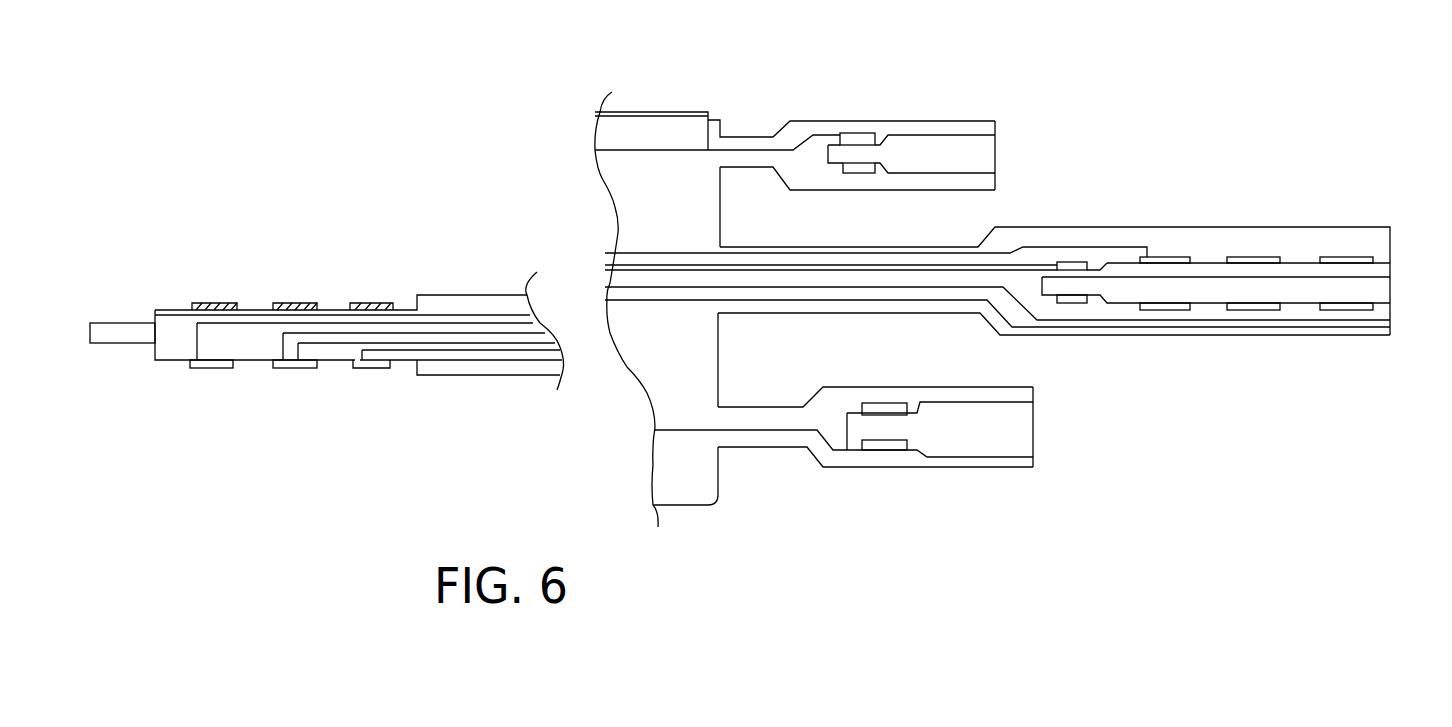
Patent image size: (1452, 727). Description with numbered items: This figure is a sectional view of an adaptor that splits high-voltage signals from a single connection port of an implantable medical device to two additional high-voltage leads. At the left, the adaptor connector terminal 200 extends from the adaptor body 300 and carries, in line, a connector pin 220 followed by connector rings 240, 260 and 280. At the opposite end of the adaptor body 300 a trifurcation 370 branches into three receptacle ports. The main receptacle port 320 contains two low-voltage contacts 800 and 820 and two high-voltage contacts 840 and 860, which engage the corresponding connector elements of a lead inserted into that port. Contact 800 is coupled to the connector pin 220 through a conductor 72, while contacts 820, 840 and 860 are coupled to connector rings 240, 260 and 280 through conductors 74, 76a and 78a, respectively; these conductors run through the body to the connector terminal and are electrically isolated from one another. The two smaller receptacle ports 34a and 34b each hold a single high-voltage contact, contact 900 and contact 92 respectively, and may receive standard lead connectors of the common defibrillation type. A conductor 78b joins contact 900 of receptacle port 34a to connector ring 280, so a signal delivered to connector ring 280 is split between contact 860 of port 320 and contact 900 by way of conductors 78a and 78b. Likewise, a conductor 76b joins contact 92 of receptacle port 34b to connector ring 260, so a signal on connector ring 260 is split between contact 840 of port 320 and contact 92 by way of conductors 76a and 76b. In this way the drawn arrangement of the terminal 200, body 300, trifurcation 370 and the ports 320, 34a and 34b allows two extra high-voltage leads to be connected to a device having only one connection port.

The adaptor connector terminal 200 is at (318, 203).
The connector pin 220 is at (107, 323).
The conductor 72 is at (168, 309).
The conductor 74 is at (247, 322).
The connector ring 240 is at (215, 303).
The connector ring 260 is at (299, 303).
The connector ring 280 is at (387, 300).
The conductor 76a is at (283, 345).
The conductor 76b is at (300, 348).
The conductor 78a is at (372, 365).
The conductor 78b is at (408, 368).
The adaptor body 300 is at (638, 112).
The trifurcation 370 is at (728, 503).
The receptacle port 34b is at (905, 121).
The high-voltage contact 92 is at (858, 140).
The receptacle port 320 is at (1248, 228).
The low-voltage contact 800 is at (1065, 304).
The low-voltage contact 820 is at (1160, 310).
The high-voltage contact 840 is at (1257, 310).
The high-voltage contact 860 is at (1345, 310).
The receptacle port 34a is at (910, 470).
The high-voltage contact 900 is at (885, 405).